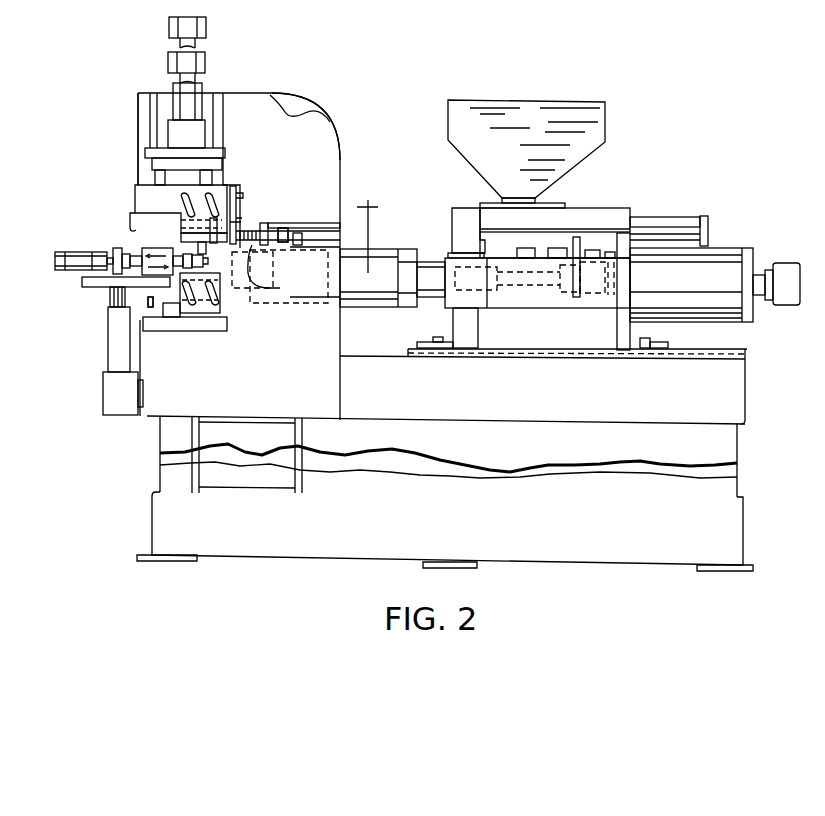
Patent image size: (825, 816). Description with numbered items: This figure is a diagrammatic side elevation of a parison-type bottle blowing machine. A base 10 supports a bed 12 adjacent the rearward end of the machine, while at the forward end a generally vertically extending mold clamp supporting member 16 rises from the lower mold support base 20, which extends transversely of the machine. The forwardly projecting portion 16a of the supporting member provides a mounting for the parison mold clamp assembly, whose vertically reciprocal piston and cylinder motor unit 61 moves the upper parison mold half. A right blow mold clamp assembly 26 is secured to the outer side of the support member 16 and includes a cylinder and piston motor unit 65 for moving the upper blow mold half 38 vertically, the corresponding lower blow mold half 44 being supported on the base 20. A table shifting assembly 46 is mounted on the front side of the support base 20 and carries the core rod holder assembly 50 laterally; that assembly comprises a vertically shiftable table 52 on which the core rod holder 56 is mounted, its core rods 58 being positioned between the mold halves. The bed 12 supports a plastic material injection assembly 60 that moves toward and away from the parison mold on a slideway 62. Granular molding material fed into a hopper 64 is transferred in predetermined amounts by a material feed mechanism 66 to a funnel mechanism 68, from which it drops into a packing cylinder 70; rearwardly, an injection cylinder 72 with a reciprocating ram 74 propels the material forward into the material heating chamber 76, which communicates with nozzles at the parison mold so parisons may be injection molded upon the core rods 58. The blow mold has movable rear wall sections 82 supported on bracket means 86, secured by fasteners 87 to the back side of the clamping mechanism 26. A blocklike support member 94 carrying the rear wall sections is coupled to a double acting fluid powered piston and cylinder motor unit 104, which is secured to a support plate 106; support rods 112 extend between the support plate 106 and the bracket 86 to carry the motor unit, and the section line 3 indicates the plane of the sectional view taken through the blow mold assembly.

The section line 3- 3 is at (366, 209).
The base 10 is at (730, 489).
The bed 12 is at (357, 357).
The mold clamp supporting member 16 is at (341, 151).
The forwardly projecting portion 16a is at (138, 144).
The lower mold support base 20 is at (155, 403).
The right blow mold clamp assembly 26 is at (258, 165).
The upper blow mold half 38 is at (178, 213).
The lower blow mold half 44 is at (176, 305).
The table shifting assembly 46 is at (103, 397).
The core rod holder assembly 50 is at (107, 330).
The vertically shiftable table 52 is at (106, 285).
The core rod holder 56 is at (150, 252).
The core rods 58 is at (203, 262).
The plastic material injection assembly 60 is at (642, 216).
The piston and cylinder motor unit 61 is at (206, 28).
The slideway 62 is at (703, 349).
The hopper 64 is at (592, 139).
The cylinder and piston motor unit 65 is at (200, 108).
The material feed mechanism 66 is at (585, 212).
The funnel mechanism 68 is at (455, 226).
The packing cylinder 70 is at (488, 290).
The injection cylinder 72 is at (721, 250).
The ram 74 is at (557, 288).
The material heating chamber 76 is at (377, 252).
The rear wall sections 82 is at (214, 239).
The bracket means 86 is at (232, 188).
The fasteners 87 is at (241, 204).
The support member 94 is at (280, 274).
The piston and cylinder motor unit 104 is at (291, 242).
The support plate 106 is at (272, 224).
The support rods 112 is at (268, 223).